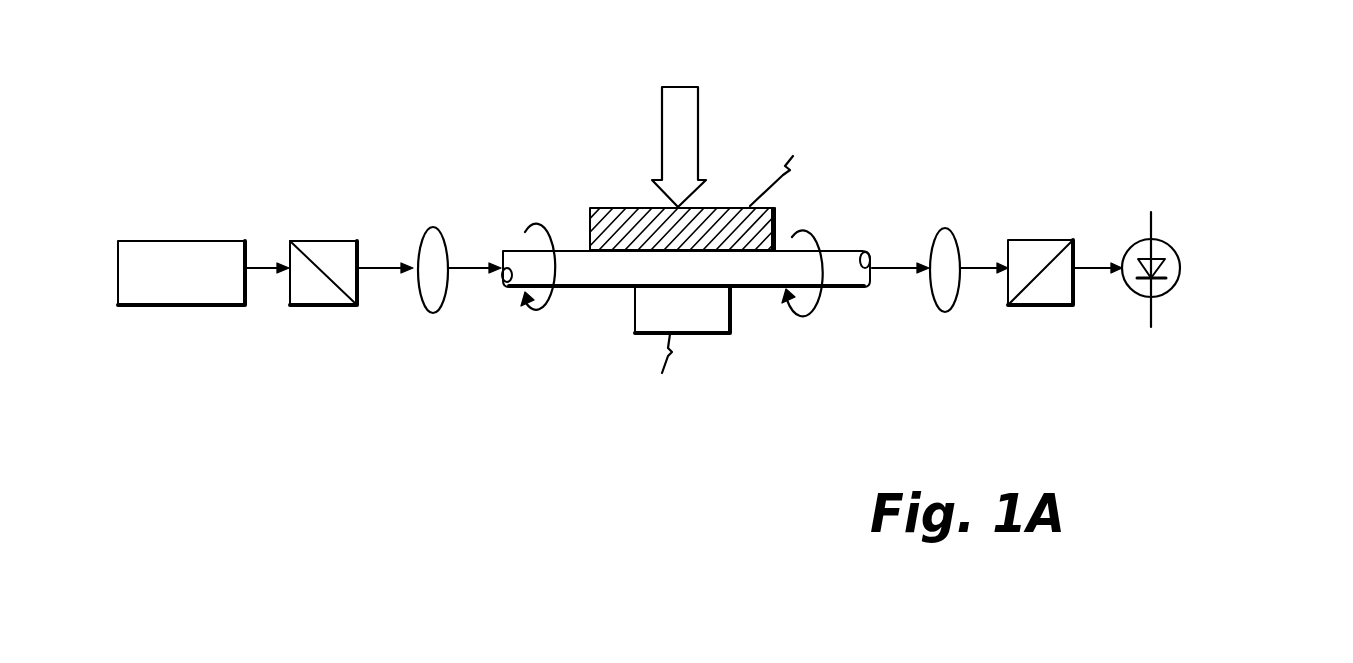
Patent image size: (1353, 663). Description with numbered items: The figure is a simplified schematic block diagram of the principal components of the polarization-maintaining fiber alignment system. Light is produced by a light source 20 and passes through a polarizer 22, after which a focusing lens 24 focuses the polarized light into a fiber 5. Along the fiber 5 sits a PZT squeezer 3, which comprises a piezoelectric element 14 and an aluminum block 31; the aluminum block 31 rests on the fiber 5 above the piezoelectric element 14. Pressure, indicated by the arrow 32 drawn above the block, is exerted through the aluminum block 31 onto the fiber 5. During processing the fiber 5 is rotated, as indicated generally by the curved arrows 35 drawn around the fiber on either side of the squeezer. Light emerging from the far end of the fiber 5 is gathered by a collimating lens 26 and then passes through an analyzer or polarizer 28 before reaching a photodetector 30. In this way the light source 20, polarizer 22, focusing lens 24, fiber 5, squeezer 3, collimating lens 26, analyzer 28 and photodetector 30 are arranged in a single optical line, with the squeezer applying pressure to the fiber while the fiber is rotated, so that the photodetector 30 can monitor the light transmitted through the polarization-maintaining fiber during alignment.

The light source 20 is at (181, 265).
The polarizer 22 is at (323, 290).
The focusing lens 24 is at (433, 270).
The fiber 5 is at (709, 226).
The aluminum block 31 is at (717, 176).
The PZT squeezer 3 is at (816, 206).
The pressure arrow 32 is at (699, 125).
The piezoelectric element 14 is at (702, 346).
The rotation arrows 35 is at (677, 305).
The collimating lens 26 is at (944, 253).
The analyzer 28 is at (1076, 289).
The photodetector 30 is at (1145, 253).